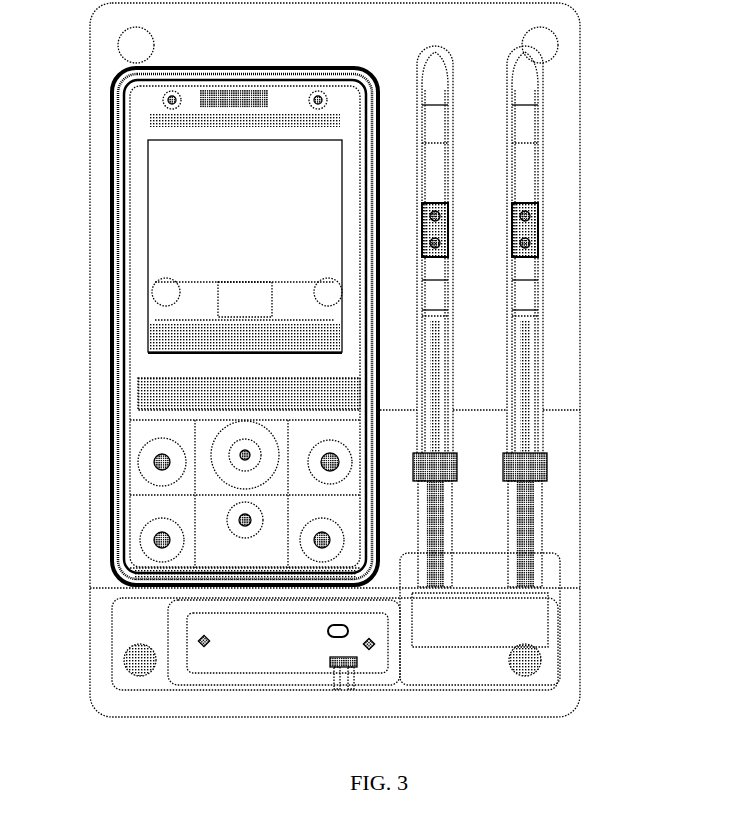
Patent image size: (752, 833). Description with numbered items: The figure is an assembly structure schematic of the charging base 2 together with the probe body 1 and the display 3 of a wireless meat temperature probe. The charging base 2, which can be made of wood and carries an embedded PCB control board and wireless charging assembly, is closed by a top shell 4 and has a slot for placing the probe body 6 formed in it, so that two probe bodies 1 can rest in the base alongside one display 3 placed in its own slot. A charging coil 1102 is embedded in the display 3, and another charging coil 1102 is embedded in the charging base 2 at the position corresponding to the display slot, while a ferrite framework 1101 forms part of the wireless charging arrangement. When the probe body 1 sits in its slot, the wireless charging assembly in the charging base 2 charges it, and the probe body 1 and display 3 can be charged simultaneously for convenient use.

The probe body 1 is at (525, 300).
The charging base 2 is at (565, 388).
The display 3 is at (150, 468).
The top shell 4 is at (517, 548).
The slot for placing probe body 6 is at (535, 150).
The ferrite framework 1101 is at (522, 513).
The charging coil 1102 is at (535, 483).